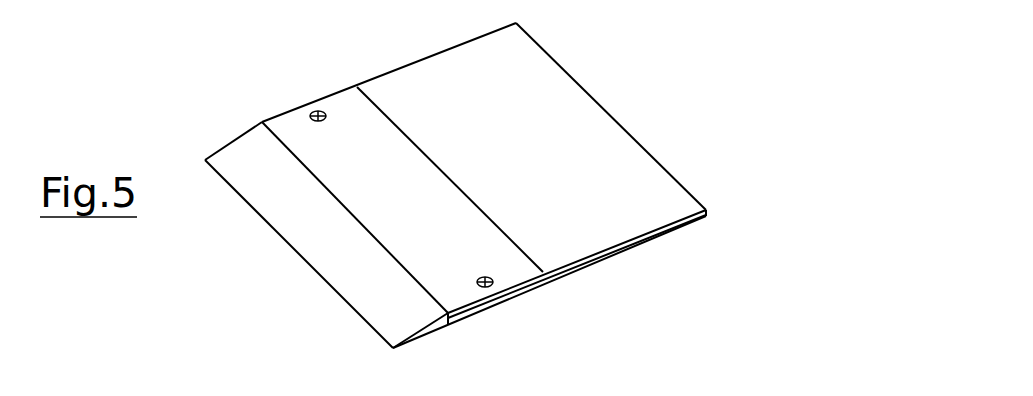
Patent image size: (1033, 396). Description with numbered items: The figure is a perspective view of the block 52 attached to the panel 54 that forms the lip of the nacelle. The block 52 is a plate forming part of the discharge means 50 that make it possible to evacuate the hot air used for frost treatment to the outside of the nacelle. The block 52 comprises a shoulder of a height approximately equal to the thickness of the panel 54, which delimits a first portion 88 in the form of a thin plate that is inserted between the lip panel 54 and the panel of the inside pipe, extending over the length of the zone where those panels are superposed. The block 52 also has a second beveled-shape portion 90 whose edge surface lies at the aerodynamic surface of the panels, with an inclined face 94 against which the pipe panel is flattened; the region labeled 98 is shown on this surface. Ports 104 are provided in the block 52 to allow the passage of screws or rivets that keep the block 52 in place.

The discharge means 50 is at (444, 193).
The block 52 is at (272, 123).
The panel of the lip 54 is at (597, 138).
The first portion 88 is at (347, 115).
The second beveled-shape portion 90 is at (440, 328).
The inclined face 94 is at (280, 250).
The surface / middle strip edge 98 is at (517, 243).
The ports 104 is at (315, 122).